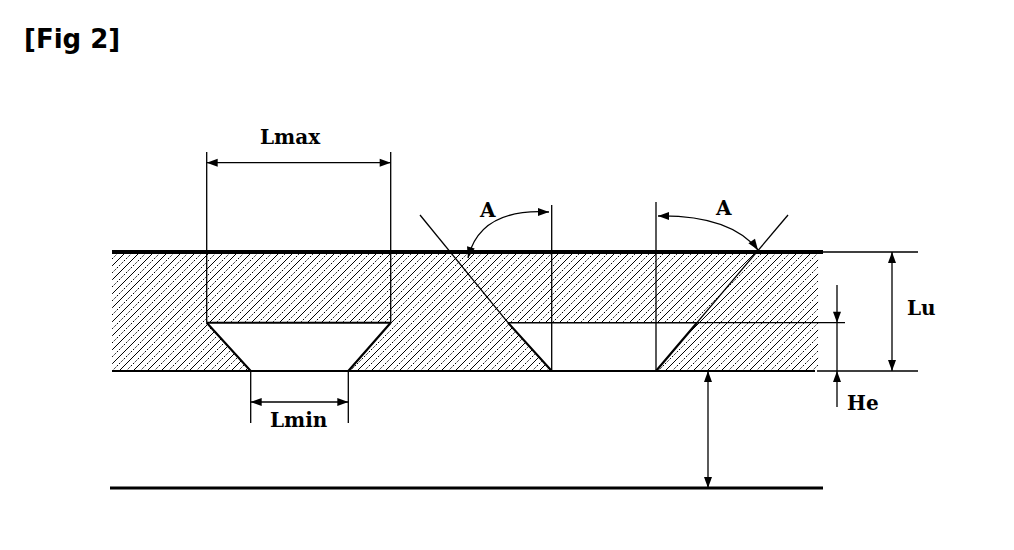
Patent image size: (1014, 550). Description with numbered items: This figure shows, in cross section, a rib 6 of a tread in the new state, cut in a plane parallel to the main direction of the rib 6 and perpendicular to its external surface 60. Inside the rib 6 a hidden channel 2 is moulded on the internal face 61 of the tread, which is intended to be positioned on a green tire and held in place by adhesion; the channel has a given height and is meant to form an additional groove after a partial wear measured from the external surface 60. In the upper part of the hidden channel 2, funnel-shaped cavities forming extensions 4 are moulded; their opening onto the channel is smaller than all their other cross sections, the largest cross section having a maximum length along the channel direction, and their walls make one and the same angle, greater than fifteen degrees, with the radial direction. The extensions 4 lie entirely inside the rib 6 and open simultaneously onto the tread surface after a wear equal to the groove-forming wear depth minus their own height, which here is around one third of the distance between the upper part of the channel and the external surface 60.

The hidden channel 2 is at (198, 430).
The extension 4 is at (283, 343).
The rib 6 is at (622, 173).
The external surface 60 is at (307, 245).
The internal face 61 is at (401, 497).